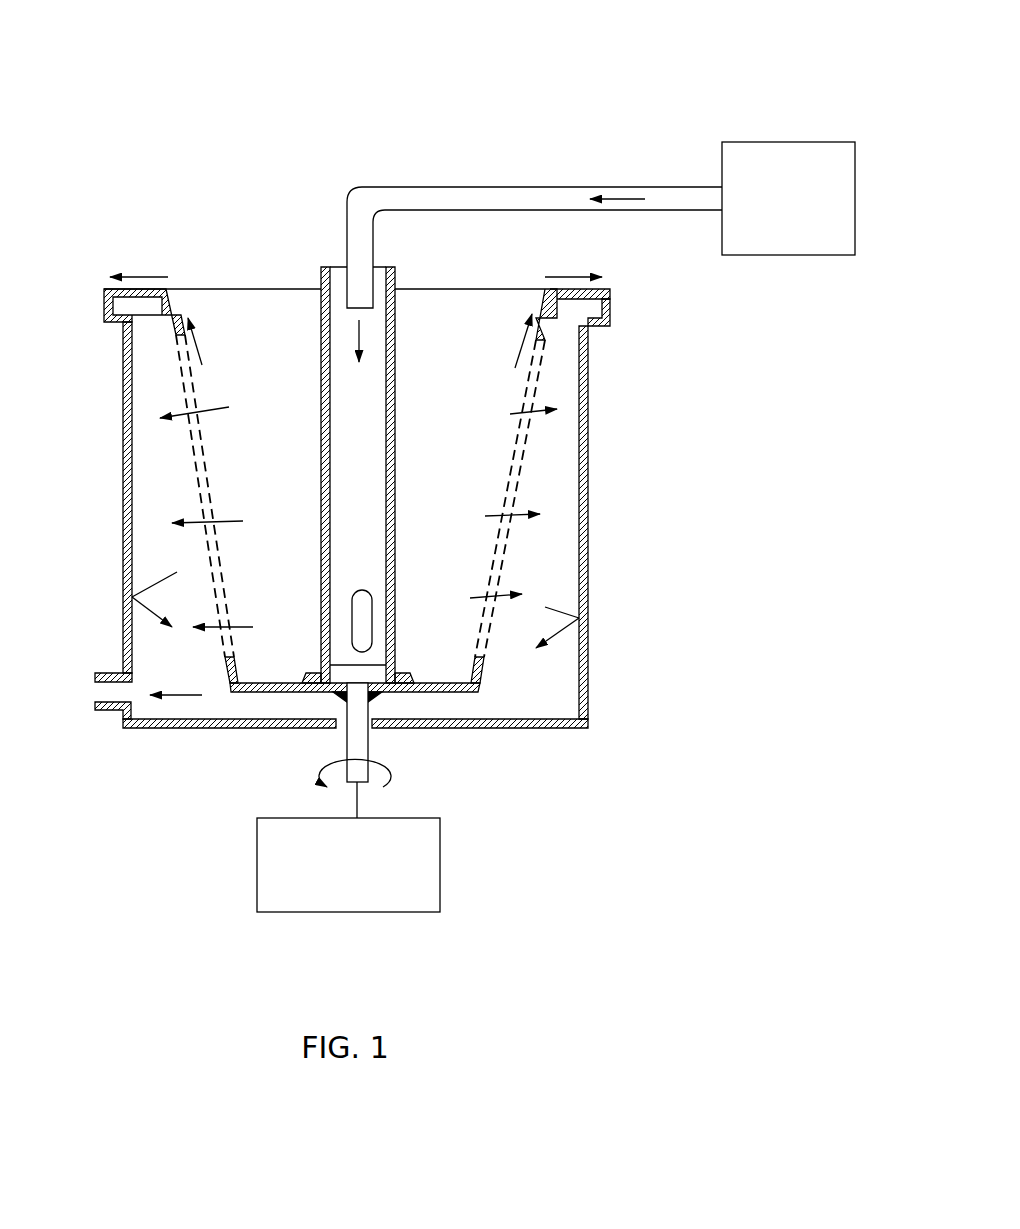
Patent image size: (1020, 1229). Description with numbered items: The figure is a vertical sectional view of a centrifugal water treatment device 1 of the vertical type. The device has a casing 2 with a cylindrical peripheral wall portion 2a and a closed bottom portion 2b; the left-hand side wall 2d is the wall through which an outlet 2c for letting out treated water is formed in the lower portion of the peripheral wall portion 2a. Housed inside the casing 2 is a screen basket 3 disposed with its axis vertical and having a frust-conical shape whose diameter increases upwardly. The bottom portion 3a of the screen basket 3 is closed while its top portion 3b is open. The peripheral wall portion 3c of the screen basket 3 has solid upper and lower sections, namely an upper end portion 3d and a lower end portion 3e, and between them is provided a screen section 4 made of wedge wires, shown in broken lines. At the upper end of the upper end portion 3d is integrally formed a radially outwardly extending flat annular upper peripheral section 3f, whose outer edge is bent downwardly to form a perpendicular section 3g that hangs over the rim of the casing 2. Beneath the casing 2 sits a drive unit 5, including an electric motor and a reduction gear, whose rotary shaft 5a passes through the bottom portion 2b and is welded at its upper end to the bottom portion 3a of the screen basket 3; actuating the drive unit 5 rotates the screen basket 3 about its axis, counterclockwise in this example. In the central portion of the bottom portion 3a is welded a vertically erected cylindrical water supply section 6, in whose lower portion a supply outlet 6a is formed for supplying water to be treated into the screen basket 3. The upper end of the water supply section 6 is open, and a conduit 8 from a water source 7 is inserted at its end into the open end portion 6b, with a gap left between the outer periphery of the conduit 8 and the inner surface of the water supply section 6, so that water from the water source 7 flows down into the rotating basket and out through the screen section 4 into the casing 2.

The centrifugal water treatment device 1 is at (228, 166).
The casing 2 is at (592, 442).
The peripheral wall portion 2a is at (590, 540).
The bottom portion 2b is at (530, 723).
The outlet 2c is at (100, 692).
The vessel left side wall 2d is at (126, 500).
The screen basket 3 is at (548, 363).
The bottom portion 3a is at (462, 703).
The top portion 3b is at (282, 287).
The peripheral wall portion 3c is at (522, 467).
The upper end portion 3d is at (543, 300).
The lower end portion 3e is at (483, 675).
The upper peripheral section 3f is at (593, 289).
The perpendicular section 3g is at (612, 305).
The screen section 4 is at (508, 565).
The drive unit 5 is at (257, 872).
The rotary shaft 5a is at (352, 738).
The water supply section 6 is at (396, 425).
The supply outlet 6a is at (366, 598).
The open end portion 6b is at (396, 280).
The water source 7 is at (762, 142).
The conduit 8 is at (430, 184).